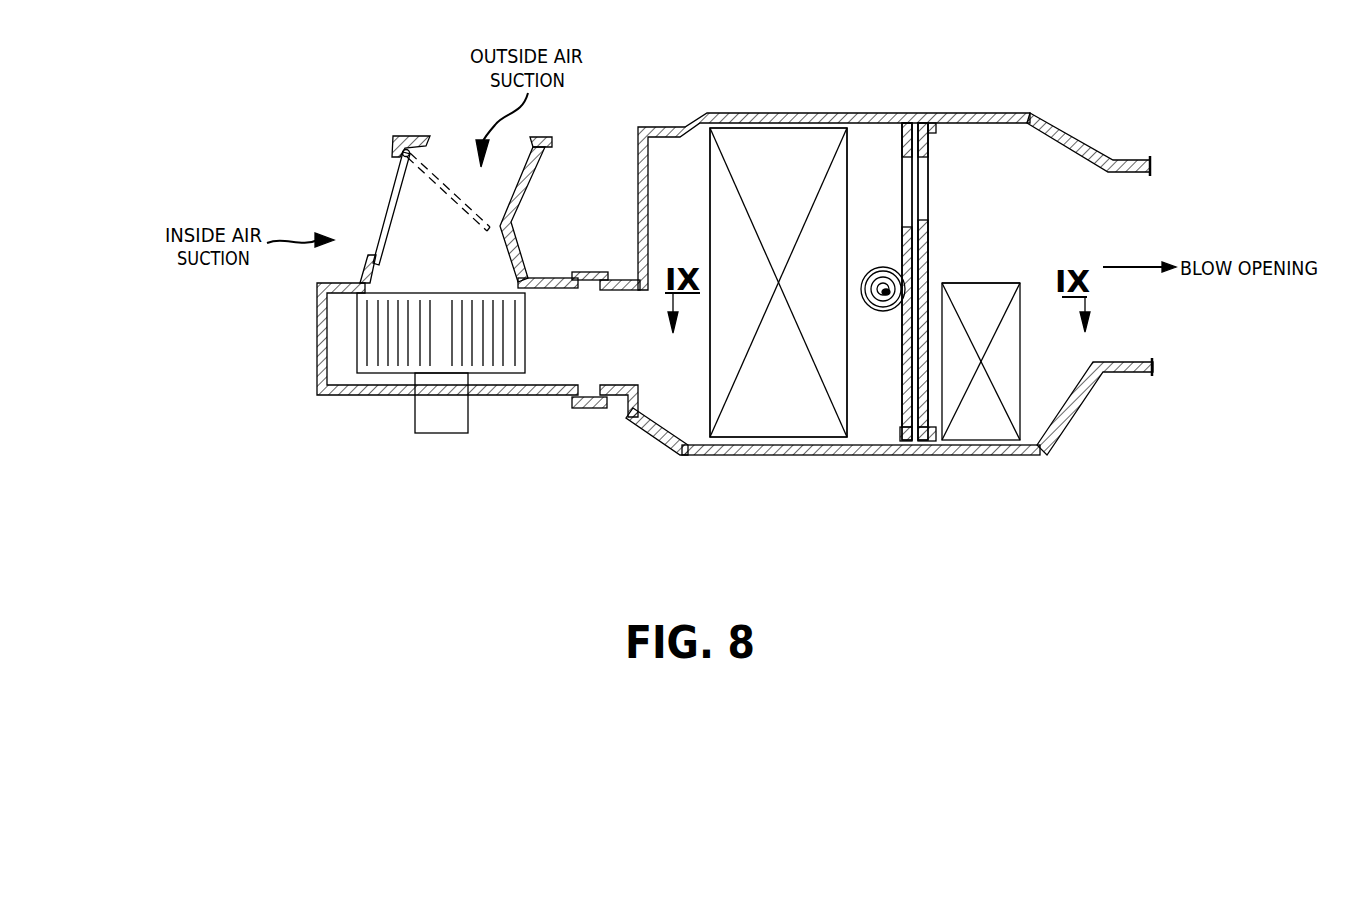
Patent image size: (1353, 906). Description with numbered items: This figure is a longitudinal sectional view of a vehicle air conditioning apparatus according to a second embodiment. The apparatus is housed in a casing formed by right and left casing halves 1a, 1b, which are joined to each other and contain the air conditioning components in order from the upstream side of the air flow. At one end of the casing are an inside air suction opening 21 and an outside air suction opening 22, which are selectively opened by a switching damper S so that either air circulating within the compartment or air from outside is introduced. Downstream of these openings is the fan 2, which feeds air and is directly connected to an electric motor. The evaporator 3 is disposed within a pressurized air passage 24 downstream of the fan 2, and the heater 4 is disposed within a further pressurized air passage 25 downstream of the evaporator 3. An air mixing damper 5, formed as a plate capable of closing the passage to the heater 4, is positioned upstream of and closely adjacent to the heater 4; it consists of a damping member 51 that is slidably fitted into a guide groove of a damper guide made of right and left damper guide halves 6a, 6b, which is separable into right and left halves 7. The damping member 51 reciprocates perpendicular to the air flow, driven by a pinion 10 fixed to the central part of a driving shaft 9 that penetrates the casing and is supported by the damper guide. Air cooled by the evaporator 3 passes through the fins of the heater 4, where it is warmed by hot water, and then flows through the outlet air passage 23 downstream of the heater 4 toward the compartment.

The right casing half 1a is at (752, 122).
The left casing half 1b is at (778, 282).
The fan 2 is at (368, 375).
The evaporator 3 is at (717, 408).
The heater 4 is at (980, 420).
The air mixing damper 5 is at (948, 163).
The right damper guide half 6a is at (910, 122).
The left damper guide half 6b is at (915, 281).
The separable right and left halves 7 is at (913, 432).
The driving shaft 9 is at (883, 300).
The pinion 10 is at (877, 303).
The inside air suction opening 21 is at (370, 253).
The outside air suction opening 22 is at (438, 165).
The outlet air passage 23 is at (1123, 317).
The pressurized air passage 24 is at (620, 333).
The pressurized air passage 25 is at (963, 283).
The damping member 51 is at (923, 227).
The switching damper S is at (388, 200).